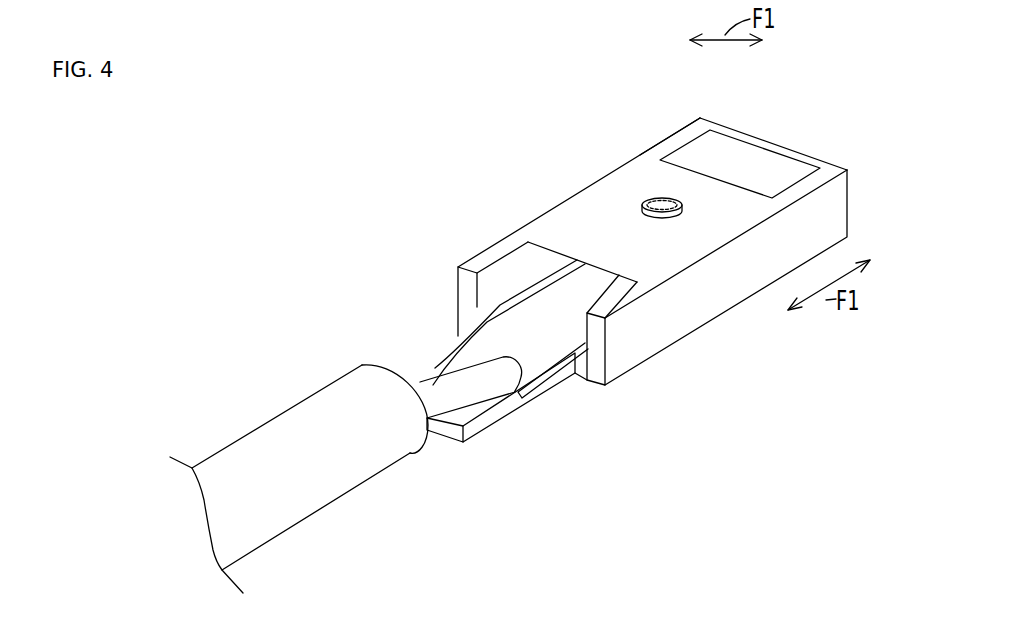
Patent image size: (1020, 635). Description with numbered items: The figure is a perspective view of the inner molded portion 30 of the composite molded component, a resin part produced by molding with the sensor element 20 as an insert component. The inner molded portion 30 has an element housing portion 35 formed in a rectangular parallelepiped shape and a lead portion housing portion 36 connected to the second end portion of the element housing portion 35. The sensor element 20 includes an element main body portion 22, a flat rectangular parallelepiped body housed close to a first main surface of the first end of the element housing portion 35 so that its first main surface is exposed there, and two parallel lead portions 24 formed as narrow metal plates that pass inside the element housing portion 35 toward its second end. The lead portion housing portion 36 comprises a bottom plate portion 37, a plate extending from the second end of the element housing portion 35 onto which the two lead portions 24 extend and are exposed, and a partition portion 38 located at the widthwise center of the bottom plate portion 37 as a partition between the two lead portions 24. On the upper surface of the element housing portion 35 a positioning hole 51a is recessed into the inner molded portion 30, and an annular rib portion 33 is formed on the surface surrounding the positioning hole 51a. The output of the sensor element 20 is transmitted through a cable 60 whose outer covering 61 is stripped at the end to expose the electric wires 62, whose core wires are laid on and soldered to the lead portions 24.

The sensor element 20 is at (750, 133).
The element main body portion 22 is at (782, 165).
The lead portions 24 is at (557, 370).
The inner molded portion 30 is at (582, 189).
The annular rib portion 33 is at (640, 207).
The element housing portion 35 is at (706, 116).
The lead portion housing portion 36 is at (543, 208).
The bottom plate portion 37 is at (530, 402).
The partition portion 38 is at (505, 308).
The positioning hole 51a is at (661, 198).
The cable 60 is at (275, 418).
The outer covering 61 is at (328, 488).
The electric wires 62 is at (431, 383).